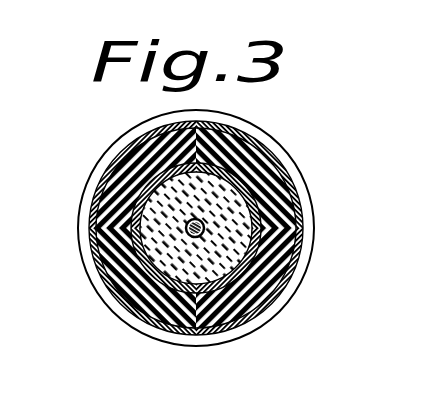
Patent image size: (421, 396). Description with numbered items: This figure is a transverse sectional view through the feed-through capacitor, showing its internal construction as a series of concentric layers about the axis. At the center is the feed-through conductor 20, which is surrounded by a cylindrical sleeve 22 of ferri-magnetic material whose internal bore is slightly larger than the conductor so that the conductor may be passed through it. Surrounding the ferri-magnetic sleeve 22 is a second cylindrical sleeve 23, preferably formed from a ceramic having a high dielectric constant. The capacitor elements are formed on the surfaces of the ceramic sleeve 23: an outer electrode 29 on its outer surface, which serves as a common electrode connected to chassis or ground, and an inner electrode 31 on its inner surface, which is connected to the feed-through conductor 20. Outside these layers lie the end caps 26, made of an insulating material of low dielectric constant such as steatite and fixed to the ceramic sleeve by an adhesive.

The feed-through conductor 20 is at (196, 213).
The cylindrical sleeve of ferri-magnetic material 22 is at (137, 231).
The second cylindrical sleeve 23 is at (150, 128).
The end caps 26 is at (105, 136).
The outer electrode 29 is at (225, 128).
The inner electrode 31 is at (122, 193).